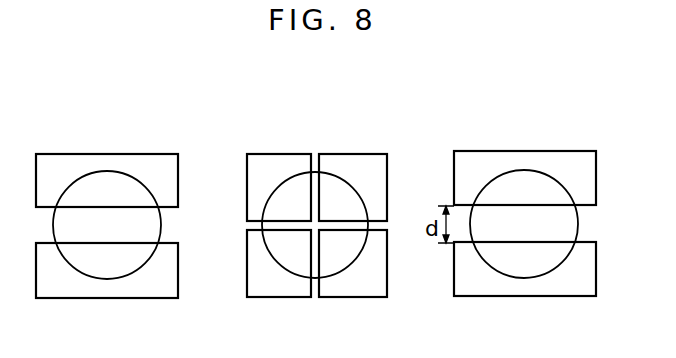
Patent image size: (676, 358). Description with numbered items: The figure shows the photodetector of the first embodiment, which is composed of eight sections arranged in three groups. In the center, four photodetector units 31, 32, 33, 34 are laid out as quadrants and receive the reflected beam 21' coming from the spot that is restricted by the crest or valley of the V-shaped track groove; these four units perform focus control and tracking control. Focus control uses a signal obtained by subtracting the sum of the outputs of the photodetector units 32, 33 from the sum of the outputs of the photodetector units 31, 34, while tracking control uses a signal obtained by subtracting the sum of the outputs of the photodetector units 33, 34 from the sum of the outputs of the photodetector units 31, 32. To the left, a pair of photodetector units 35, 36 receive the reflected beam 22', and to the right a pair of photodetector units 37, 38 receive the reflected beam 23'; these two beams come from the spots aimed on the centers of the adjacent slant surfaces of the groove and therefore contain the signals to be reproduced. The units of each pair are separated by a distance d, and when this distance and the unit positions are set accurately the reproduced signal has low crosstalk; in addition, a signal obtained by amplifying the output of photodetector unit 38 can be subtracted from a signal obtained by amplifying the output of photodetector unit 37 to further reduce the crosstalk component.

The reflected beam 21' is at (315, 193).
The reflected beam 22' is at (113, 194).
The reflected beam 23' is at (524, 192).
The photodetector unit 31 is at (273, 288).
The photodetector unit 32 is at (365, 288).
The photodetector unit 33 is at (277, 160).
The photodetector unit 34 is at (373, 160).
The photodetector unit 35 is at (140, 288).
The photodetector unit 36 is at (75, 161).
The photodetector unit 37 is at (571, 158).
The photodetector unit 38 is at (565, 285).